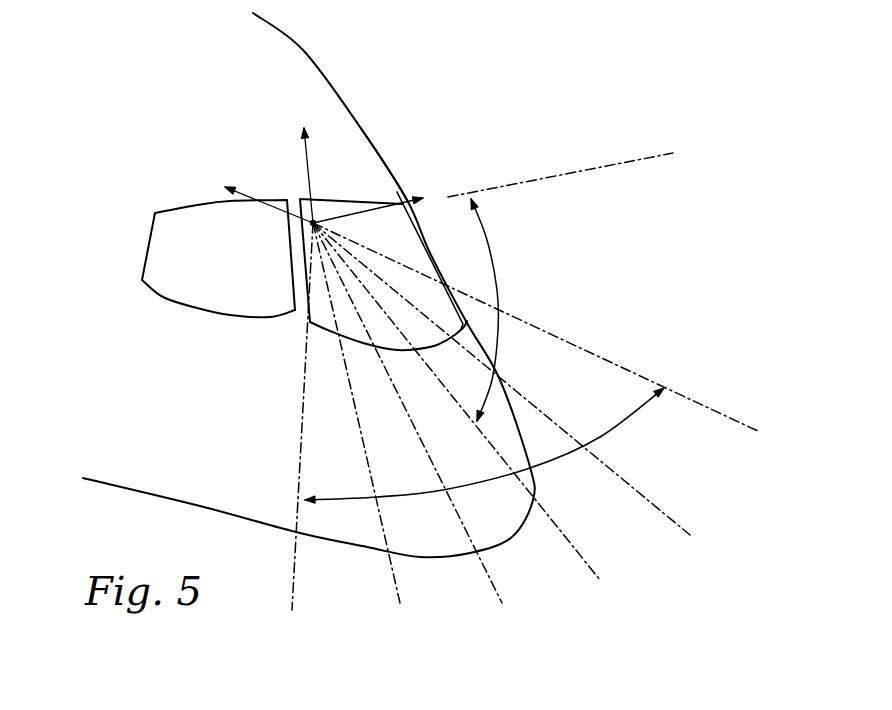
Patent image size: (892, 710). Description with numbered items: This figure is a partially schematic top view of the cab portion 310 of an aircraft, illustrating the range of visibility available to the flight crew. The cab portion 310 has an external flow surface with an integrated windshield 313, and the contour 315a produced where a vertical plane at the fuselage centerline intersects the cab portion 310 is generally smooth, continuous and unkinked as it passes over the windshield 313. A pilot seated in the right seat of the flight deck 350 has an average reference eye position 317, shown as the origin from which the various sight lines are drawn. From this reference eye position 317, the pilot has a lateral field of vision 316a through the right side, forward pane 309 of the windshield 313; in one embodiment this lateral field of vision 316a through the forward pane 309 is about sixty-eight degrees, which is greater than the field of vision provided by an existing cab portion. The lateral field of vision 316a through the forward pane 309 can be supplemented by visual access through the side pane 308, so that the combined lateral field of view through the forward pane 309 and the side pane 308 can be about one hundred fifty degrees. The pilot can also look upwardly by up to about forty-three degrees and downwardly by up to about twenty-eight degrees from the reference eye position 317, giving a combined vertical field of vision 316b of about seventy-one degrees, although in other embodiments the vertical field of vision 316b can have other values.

The side pane 308 is at (172, 278).
The forward pane 309 is at (403, 230).
The cab portion 310 is at (283, 90).
The windshield 313 is at (417, 255).
The first contour 315a is at (390, 175).
The lateral field of vision 316a is at (628, 423).
The vertical field of vision 316b is at (497, 325).
The reference eye position 317 is at (311, 224).
The flight deck 350 is at (333, 168).